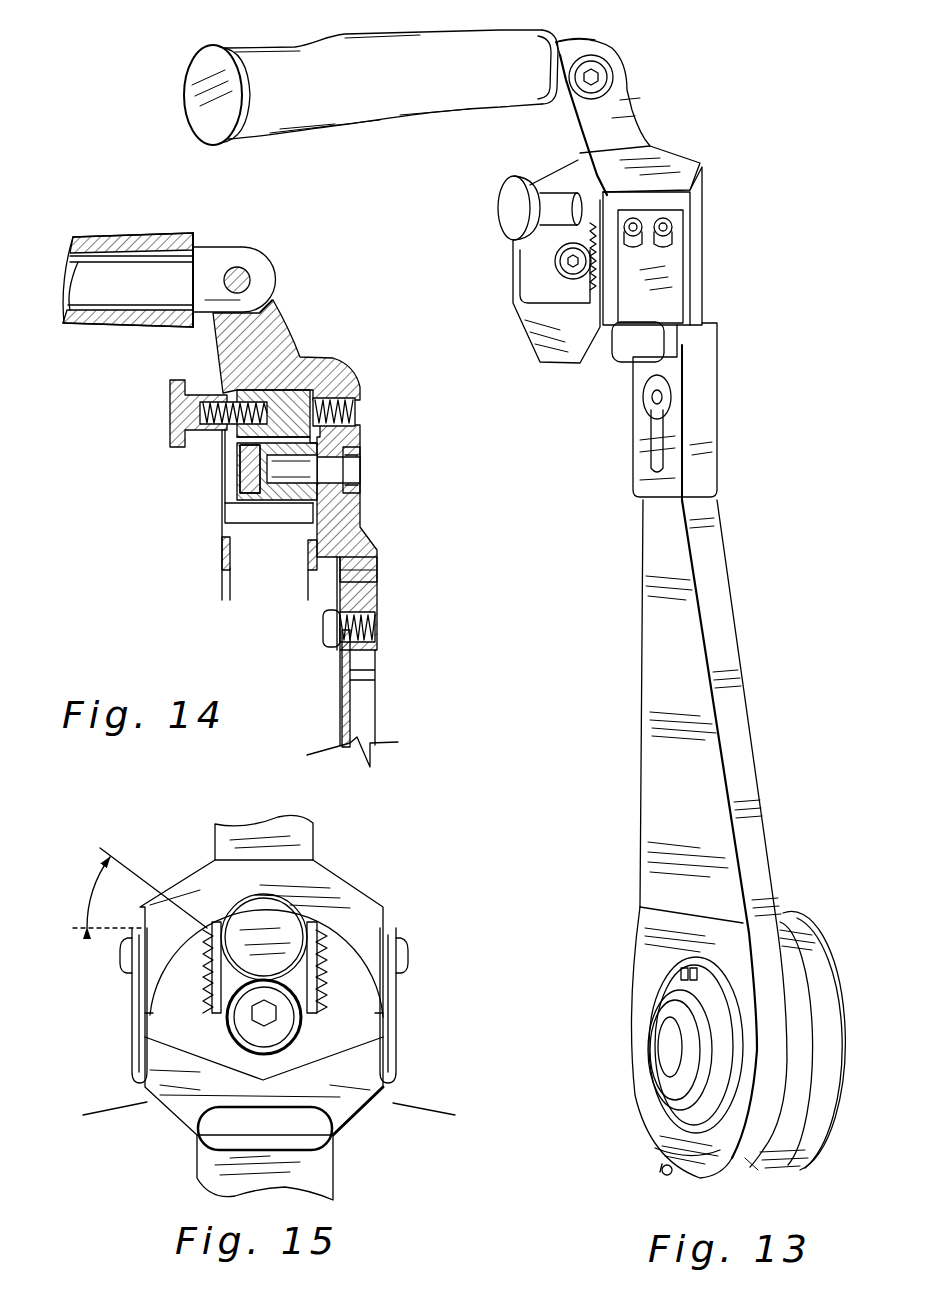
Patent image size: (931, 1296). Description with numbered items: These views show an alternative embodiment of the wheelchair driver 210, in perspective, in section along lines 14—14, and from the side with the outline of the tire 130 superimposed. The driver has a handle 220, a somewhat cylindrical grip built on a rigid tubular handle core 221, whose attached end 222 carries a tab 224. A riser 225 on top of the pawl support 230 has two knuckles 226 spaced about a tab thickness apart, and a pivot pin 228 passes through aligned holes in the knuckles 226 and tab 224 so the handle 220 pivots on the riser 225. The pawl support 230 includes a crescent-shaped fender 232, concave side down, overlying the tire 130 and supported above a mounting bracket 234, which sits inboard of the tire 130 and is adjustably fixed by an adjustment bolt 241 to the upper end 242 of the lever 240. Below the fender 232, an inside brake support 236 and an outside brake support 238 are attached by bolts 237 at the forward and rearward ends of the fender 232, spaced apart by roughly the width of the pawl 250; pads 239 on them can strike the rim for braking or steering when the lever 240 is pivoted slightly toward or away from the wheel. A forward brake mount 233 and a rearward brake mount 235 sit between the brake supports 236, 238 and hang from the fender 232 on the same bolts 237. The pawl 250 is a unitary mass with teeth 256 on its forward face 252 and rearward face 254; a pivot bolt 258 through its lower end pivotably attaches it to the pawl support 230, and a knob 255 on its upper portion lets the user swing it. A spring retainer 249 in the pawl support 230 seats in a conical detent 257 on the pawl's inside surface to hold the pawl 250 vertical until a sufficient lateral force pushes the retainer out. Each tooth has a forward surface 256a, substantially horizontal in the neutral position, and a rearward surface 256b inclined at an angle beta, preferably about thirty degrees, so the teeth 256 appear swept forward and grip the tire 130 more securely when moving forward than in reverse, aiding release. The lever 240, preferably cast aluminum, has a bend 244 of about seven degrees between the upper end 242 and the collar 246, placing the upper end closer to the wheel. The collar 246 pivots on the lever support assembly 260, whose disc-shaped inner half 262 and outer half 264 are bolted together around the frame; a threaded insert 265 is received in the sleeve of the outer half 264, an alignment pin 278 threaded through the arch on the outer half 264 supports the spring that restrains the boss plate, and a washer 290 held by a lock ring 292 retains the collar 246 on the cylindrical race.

In FIG. 13, the section lines 14— 14 is at (507, 292).
In FIG. 15, the tire 130 is at (393, 1103).
In FIG. 13, the wheelchair driver 210 is at (745, 88).
In FIG. 13, the handle 220 is at (354, 100).
In FIG. 14, the handle 220 is at (72, 250).
In FIG. 14, the handle core 221 is at (72, 270).
In FIG. 13, the attached end 222 is at (530, 30).
In FIG. 14, the attached end 222 is at (210, 214).
In FIG. 13, the tab 224 is at (572, 44).
In FIG. 14, the tab 224 is at (222, 248).
In FIG. 13, the riser 225 is at (612, 136).
In FIG. 14, the riser 225 is at (275, 345).
In FIG. 15, the riser 225 is at (318, 838).
In FIG. 13, the knuckles 226 is at (612, 50).
In FIG. 14, the knuckles 226 is at (268, 305).
In FIG. 13, the pivot pin 228 is at (612, 85).
In FIG. 14, the pivot pin 228 is at (242, 272).
In FIG. 13, the pawl support 230 is at (704, 197).
In FIG. 14, the pawl support 230 is at (350, 368).
In FIG. 15, the pawl support 230 is at (150, 808).
In FIG. 13, the fender 232 is at (535, 170).
In FIG. 15, the fender 232 is at (320, 880).
In FIG. 15, the forward brake mount 233 is at (398, 1048).
In FIG. 13, the mounting bracket 234 is at (718, 444).
In FIG. 14, the mounting bracket 234 is at (337, 700).
In FIG. 15, the mounting bracket 234 is at (336, 1188).
In FIG. 14, the rearward brake mount 235 is at (248, 528).
In FIG. 15, the rearward brake mount 235 is at (130, 1048).
In FIG. 14, the inside brake support 236 is at (370, 580).
In FIG. 15, the inside brake support 236 is at (188, 1112).
In FIG. 15, the bolts 237 is at (120, 955).
In FIG. 14, the outside brake support 238 is at (218, 562).
In FIG. 14, the pads 239 is at (300, 582).
In FIG. 15, the pads 239 is at (288, 1138).
In FIG. 13, the lever 240 is at (730, 670).
In FIG. 14, the lever 240 is at (378, 715).
In FIG. 13, the adjustment bolt 241 is at (643, 403).
In FIG. 14, the adjustment bolt 241 is at (323, 632).
In FIG. 13, the upper end 242 is at (648, 544).
In FIG. 14, the upper end 242 is at (378, 605).
In FIG. 13, the bend 244 is at (655, 905).
In FIG. 13, the collar 246 is at (640, 1010).
In FIG. 14, the spring retainer 249 is at (358, 412).
In FIG. 13, the pawl 250 is at (556, 262).
In FIG. 14, the pawl 250 is at (285, 470).
In FIG. 15, the pawl 250 is at (340, 985).
In FIG. 15, the forward face 252 is at (317, 1015).
In FIG. 15, the rearward face 254 is at (215, 1015).
In FIG. 14, the knob 255 is at (168, 410).
In FIG. 15, the knob 255 is at (205, 920).
In FIG. 15, the teeth 256 is at (200, 1000).
In FIG. 15, the forward surface 256a is at (212, 925).
In FIG. 15, the rearward surface 256b is at (203, 960).
In FIG. 14, the detent 257 is at (313, 410).
In FIG. 14, the pivot bolt 258 is at (250, 470).
In FIG. 15, the pivot bolt 258 is at (278, 1035).
In FIG. 13, the lever support assembly 260 is at (595, 925).
In FIG. 13, the inner half 262 is at (785, 1168).
In FIG. 13, the outer half 264 is at (788, 960).
In FIG. 13, the insert 265 is at (665, 1075).
In FIG. 13, the alignment pin 278 is at (667, 1178).
In FIG. 13, the washer 290 is at (690, 1125).
In FIG. 13, the lock ring 292 is at (680, 1130).
In FIG. 15, the angle β beta is at (92, 900).